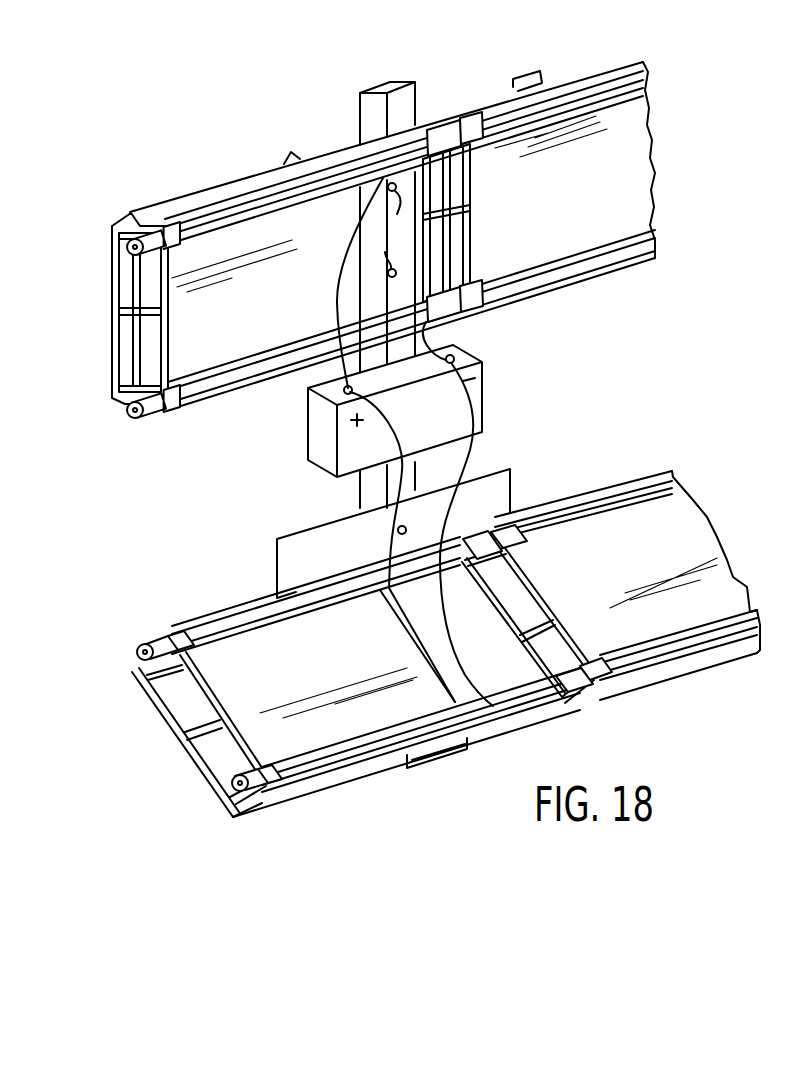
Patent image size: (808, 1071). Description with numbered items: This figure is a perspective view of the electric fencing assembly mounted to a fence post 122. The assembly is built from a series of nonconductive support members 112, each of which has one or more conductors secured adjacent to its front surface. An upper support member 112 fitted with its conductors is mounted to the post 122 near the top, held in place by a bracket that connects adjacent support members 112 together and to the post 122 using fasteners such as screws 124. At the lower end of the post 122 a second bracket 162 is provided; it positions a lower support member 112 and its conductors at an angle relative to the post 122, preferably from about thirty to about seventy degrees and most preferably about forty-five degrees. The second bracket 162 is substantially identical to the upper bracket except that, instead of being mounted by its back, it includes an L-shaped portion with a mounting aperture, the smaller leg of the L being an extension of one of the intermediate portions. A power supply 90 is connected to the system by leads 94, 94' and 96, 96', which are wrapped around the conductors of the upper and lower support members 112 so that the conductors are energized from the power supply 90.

The support member 112 is at (638, 148).
The post 122 is at (407, 97).
The screws 124 is at (362, 548).
The second bracket 162 is at (500, 500).
The power supply 90 is at (476, 392).
The lead 96 is at (324, 283).
The lead 94 is at (475, 340).
The lead 96' is at (346, 547).
The lead 94' is at (498, 535).